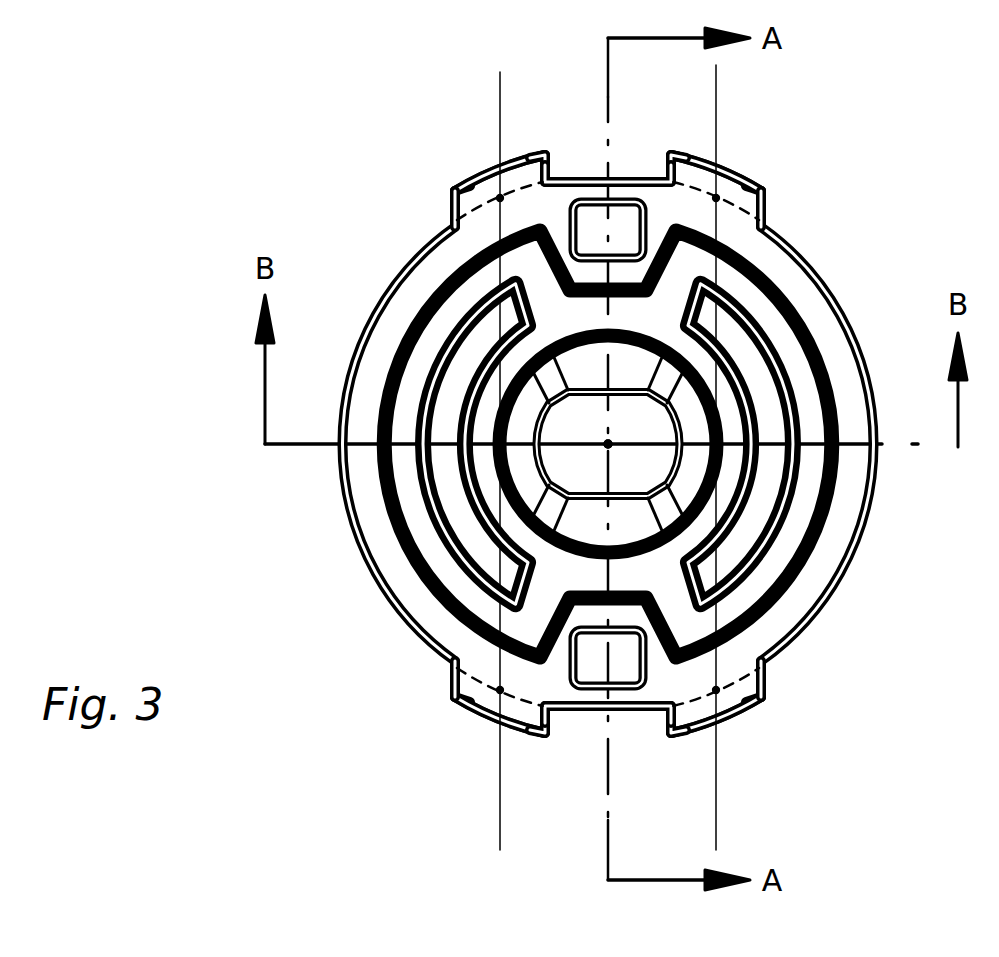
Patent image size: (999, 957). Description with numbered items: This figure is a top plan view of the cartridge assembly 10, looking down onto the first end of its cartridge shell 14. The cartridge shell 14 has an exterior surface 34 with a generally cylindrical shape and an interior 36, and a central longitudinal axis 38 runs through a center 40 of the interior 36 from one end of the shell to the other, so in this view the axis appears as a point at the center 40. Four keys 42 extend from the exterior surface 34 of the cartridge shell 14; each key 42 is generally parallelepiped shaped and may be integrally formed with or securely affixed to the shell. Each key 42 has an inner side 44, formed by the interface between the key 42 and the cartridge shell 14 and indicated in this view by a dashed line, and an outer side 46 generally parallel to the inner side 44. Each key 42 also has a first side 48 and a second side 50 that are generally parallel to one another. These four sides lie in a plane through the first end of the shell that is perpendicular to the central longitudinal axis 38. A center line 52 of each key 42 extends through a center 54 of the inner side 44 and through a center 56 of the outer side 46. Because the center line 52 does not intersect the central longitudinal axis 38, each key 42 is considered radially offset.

The cartridge assembly 10 is at (325, 202).
The cartridge shell 14 is at (340, 499).
The exterior surface 34 is at (372, 556).
The interior 36 is at (638, 420).
The central longitudinal axis 38 is at (610, 446).
The center 40 is at (898, 548).
The key 42 is at (453, 185).
The inner side 44 is at (463, 180).
The outer side 46 is at (525, 158).
The first side 48 is at (450, 200).
The second side 50 is at (548, 167).
The center line 52 is at (746, 65).
The center of the inner side 54 is at (485, 207).
The center of the outer side 56 is at (502, 200).